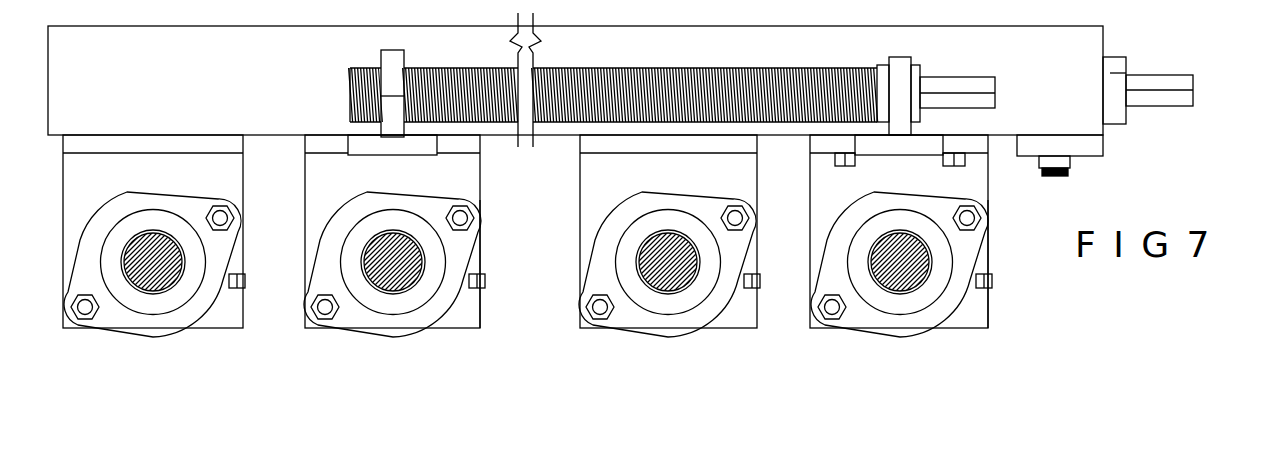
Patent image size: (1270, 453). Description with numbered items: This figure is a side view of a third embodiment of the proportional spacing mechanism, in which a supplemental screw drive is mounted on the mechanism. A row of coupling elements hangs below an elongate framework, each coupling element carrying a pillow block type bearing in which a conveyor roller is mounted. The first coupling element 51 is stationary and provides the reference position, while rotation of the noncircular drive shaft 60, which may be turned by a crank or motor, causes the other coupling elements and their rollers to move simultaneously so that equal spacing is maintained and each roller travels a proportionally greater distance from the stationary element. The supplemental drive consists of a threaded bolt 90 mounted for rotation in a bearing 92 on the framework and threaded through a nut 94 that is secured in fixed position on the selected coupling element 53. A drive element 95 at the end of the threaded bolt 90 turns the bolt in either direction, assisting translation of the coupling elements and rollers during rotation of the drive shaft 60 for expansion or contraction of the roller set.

The first coupling element 51 is at (1021, 264).
The selected coupling element 53 is at (515, 264).
The drive shaft 60 is at (1175, 73).
The threaded bolt 90 is at (680, 68).
The bearing 92 is at (900, 57).
The nut 94 is at (386, 48).
The drive element 95 is at (972, 78).